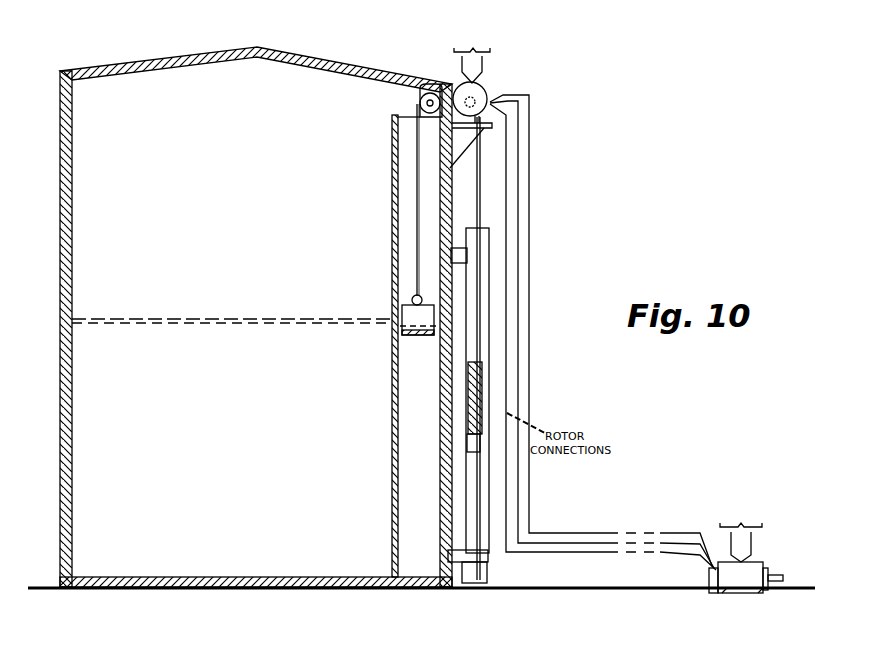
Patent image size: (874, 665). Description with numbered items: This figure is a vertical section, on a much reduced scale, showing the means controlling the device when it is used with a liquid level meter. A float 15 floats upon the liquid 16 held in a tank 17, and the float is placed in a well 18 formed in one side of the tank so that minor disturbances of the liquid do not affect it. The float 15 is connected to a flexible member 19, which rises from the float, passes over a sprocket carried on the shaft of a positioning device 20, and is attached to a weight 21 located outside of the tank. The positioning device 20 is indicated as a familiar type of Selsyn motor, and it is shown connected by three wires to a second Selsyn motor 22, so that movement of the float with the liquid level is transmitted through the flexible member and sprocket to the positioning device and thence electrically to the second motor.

The float 15 is at (408, 315).
The liquid 16 is at (200, 342).
The tank 17 is at (72, 236).
The well 18 is at (392, 190).
The flexible member 19 is at (417, 158).
The positioning device 20 is at (481, 92).
The weight 21 is at (487, 400).
The second Selsyn motor 22 is at (752, 570).